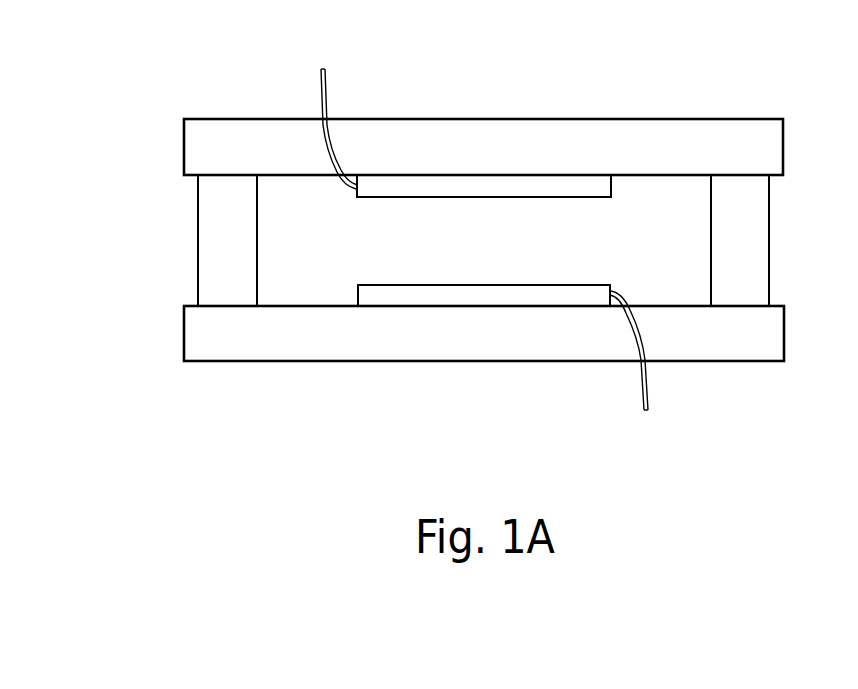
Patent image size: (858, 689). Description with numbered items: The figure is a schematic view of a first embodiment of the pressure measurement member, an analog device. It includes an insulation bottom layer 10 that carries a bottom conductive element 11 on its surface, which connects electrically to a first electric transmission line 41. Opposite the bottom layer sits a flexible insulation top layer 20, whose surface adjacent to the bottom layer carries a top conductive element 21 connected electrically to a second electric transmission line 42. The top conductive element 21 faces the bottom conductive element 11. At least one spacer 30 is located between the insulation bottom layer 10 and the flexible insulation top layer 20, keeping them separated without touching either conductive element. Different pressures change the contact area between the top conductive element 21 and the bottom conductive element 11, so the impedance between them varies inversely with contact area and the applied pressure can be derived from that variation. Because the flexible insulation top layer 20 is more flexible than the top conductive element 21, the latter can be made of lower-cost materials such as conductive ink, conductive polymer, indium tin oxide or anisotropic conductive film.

The insulation bottom layer 10 is at (714, 342).
The bottom conductive element 11 is at (485, 292).
The flexible insulation top layer 20 is at (598, 135).
The top conductive element 21 is at (473, 185).
The spacer 30 is at (210, 253).
The first electric transmission line 41 is at (641, 388).
The second electric transmission line 42 is at (318, 102).